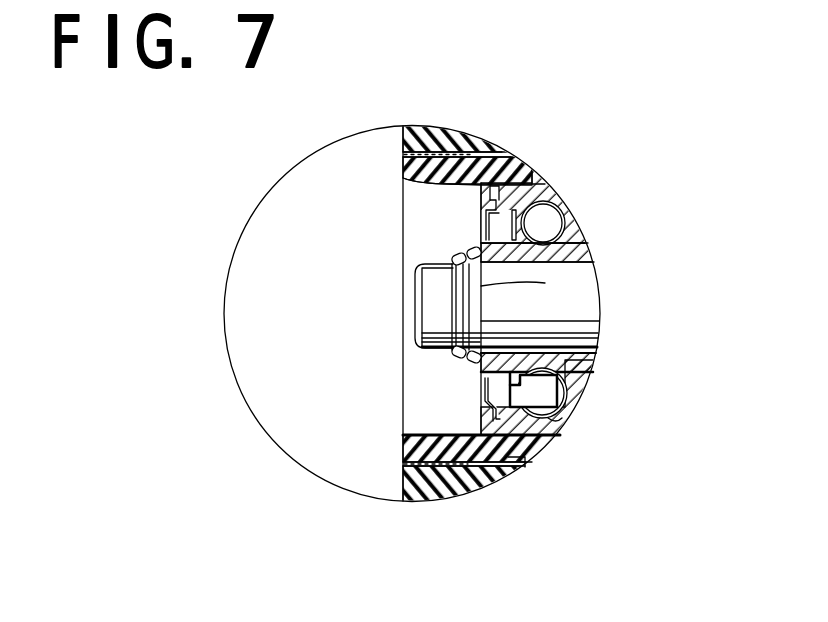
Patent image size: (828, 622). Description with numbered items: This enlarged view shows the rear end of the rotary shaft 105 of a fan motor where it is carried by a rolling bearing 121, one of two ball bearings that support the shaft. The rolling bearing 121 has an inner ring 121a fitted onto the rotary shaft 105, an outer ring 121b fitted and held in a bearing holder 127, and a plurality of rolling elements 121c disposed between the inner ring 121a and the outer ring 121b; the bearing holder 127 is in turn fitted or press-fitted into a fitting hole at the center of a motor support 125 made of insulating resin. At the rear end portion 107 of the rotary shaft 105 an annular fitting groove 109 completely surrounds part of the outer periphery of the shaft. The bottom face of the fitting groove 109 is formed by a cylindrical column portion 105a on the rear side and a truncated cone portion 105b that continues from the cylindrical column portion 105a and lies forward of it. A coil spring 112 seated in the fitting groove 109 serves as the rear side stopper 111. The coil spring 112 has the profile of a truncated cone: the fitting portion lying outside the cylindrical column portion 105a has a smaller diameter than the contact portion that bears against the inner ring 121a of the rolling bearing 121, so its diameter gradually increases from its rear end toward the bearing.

The rotary shaft 105 is at (578, 308).
The cylindrical column portion 105a is at (452, 312).
The truncated cone portion 105b is at (545, 283).
The rear end portion 107 is at (437, 290).
The fitting groove 109 is at (470, 350).
The rear side stopper 111 is at (448, 366).
The coil spring 112 is at (455, 256).
The rolling bearing 121 is at (560, 433).
The inner ring 121a is at (577, 363).
The outer ring 121b is at (555, 423).
The rolling elements 121c is at (560, 393).
The motor support 125 is at (411, 488).
The bearing holder 127 is at (487, 483).